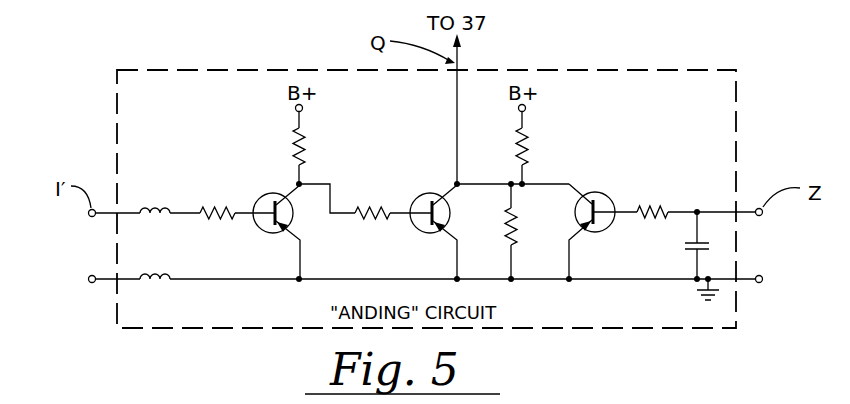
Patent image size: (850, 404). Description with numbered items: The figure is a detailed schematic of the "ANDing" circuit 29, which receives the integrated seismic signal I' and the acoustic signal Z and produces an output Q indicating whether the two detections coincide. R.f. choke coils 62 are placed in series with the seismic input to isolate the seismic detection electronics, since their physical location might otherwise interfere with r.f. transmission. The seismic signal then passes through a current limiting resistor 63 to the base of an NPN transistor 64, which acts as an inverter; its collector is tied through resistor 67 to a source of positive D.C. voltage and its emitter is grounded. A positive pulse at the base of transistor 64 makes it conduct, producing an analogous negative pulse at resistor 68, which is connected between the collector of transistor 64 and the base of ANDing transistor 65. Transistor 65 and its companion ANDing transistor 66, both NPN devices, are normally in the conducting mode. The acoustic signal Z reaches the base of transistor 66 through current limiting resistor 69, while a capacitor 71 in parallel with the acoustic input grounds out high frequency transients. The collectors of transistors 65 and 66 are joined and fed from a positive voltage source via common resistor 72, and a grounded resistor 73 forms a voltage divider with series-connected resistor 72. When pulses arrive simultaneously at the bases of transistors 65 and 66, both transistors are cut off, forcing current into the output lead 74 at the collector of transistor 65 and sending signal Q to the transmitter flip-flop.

The ANDing circuit 29 is at (147, 66).
The r.f. choke coils 62 is at (155, 231).
The current limiting resistor 63 is at (217, 201).
The NPN transistor 64 is at (260, 194).
The ANDing transistor 65 is at (415, 193).
The ANDing transistor 66 is at (612, 193).
The resistor 67 is at (316, 147).
The resistor 68 is at (372, 201).
The current limiting resistor 69 is at (652, 201).
The capacitor 71 is at (682, 245).
The common resistor 72 is at (540, 147).
The grounded resistor 73 is at (527, 226).
The output lead 74 is at (455, 137).